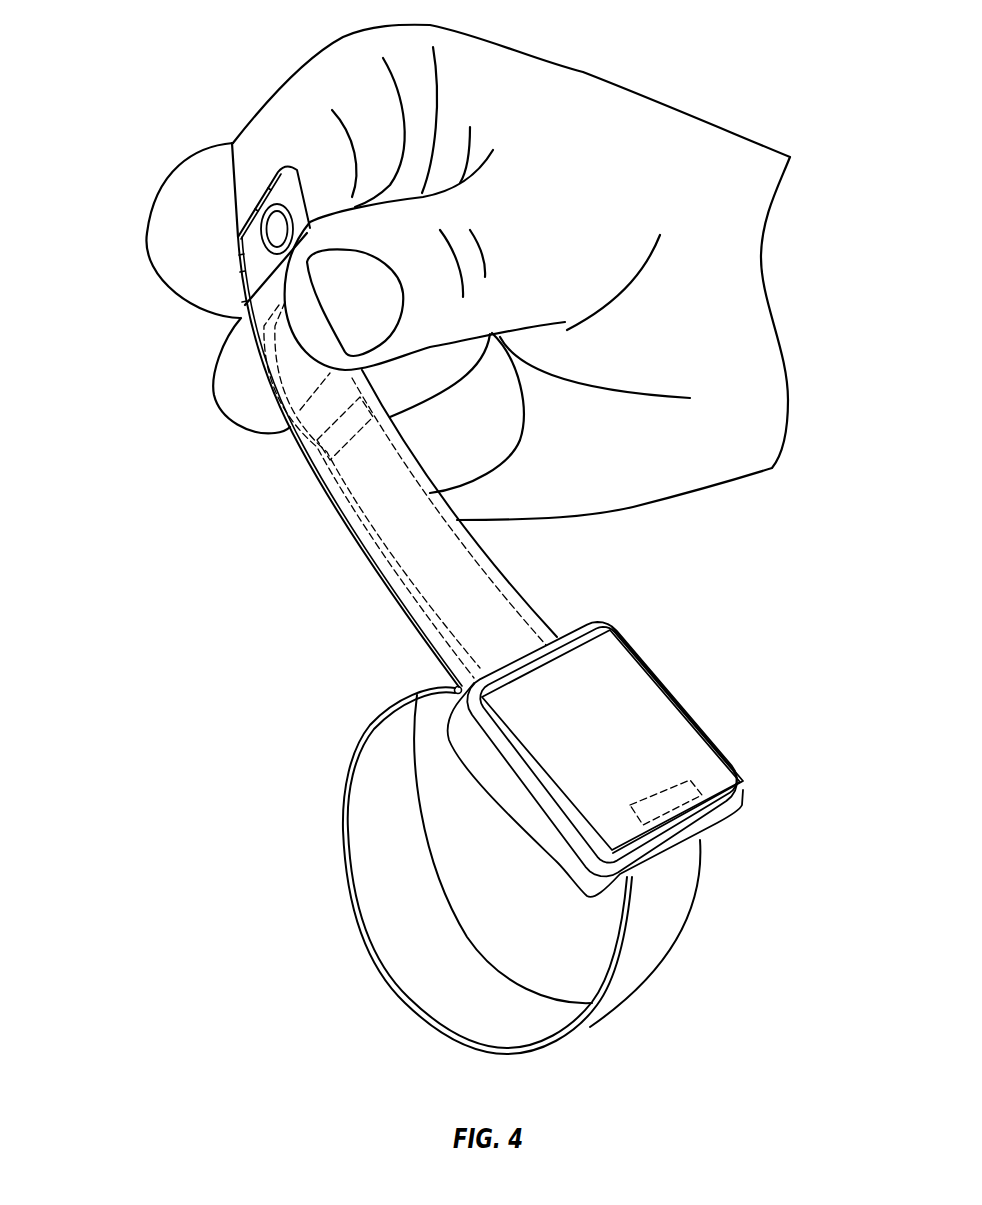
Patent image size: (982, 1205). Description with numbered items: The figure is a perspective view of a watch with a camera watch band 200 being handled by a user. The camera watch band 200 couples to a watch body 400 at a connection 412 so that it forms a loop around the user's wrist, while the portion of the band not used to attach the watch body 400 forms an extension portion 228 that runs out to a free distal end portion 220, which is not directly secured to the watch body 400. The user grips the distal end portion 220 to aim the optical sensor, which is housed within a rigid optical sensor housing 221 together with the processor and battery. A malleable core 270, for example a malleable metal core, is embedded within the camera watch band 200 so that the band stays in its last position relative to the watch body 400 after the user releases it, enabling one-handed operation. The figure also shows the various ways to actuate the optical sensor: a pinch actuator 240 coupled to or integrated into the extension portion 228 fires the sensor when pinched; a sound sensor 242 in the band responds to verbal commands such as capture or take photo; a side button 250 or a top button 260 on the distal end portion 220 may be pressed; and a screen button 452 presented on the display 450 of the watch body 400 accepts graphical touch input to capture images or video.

The camera watch band 200 is at (383, 933).
The distal end portion 220 is at (132, 253).
The optical sensor housing 221 is at (243, 247).
The extension portion 228 is at (393, 777).
The pinch actuator 240 is at (264, 345).
The sound sensor 242 is at (317, 455).
The side button 250 is at (240, 281).
The top button 260 is at (258, 197).
The malleable core 270 is at (387, 547).
The watch body 400 is at (547, 838).
The connection 412 is at (455, 687).
The display 450 is at (658, 718).
The screen button 452 is at (690, 783).